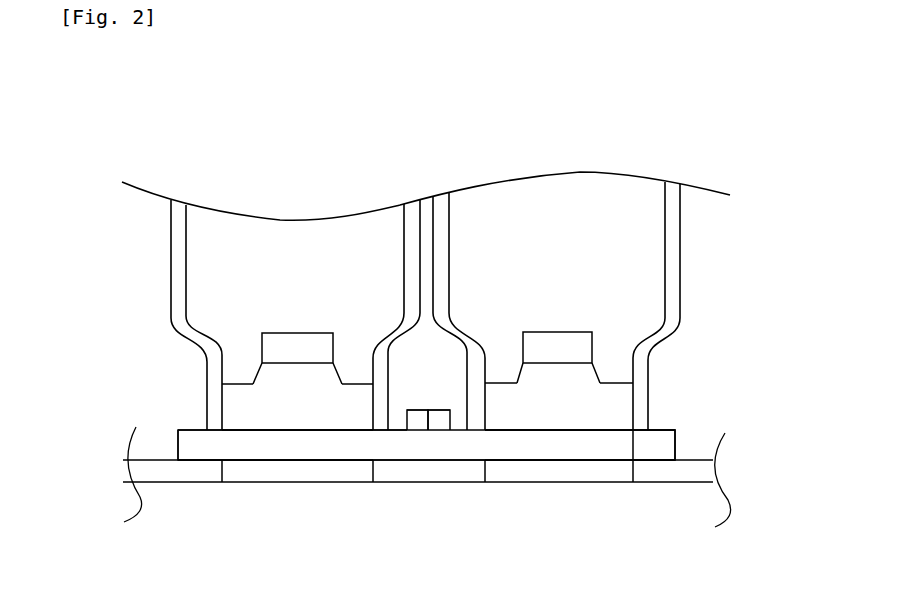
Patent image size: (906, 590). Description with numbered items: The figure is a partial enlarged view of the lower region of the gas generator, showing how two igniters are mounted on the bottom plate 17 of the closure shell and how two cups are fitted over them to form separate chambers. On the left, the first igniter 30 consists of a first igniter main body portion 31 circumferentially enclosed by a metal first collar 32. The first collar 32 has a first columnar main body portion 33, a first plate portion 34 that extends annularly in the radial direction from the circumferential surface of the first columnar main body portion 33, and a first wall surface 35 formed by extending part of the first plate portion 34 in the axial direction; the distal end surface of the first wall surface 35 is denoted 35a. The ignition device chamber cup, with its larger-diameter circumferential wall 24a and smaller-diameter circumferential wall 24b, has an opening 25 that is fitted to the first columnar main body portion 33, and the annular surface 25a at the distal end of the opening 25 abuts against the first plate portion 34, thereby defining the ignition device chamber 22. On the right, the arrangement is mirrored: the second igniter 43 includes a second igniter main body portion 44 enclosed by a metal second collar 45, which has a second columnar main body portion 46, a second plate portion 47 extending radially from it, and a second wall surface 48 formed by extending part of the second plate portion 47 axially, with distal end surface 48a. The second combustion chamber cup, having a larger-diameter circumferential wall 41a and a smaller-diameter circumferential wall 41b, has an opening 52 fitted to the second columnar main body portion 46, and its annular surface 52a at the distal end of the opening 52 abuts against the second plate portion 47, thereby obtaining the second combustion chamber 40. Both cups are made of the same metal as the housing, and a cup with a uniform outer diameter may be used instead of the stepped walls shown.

The bottom plate 17 is at (165, 473).
The ignition device chamber 22 is at (336, 254).
The larger-diameter circumferential wall 24a is at (180, 276).
The smaller-diameter circumferential wall 24b is at (210, 367).
The opening 25 is at (421, 475).
The annular surface 25a is at (382, 437).
The first igniter 30 is at (293, 325).
The first igniter main body portion 31 is at (321, 345).
The first collar 32 is at (260, 469).
The first columnar main body portion 33 is at (242, 407).
The first plate portion 34 is at (187, 440).
The first wall surface 35 is at (369, 400).
The distal end surface 35a is at (409, 410).
The second combustion chamber 40 is at (599, 231).
The larger-diameter circumferential wall 41a is at (675, 258).
The smaller-diameter circumferential wall 41b is at (652, 410).
The second igniter 43 is at (565, 326).
The second igniter main body portion 44 is at (576, 342).
The second collar 45 is at (542, 447).
The second columnar main body portion 46 is at (622, 397).
The second plate portion 47 is at (667, 443).
The second wall surface 48 is at (435, 445).
The distal end surface 48a is at (443, 410).
The opening 52 is at (651, 456).
The annular surface 52a is at (477, 432).